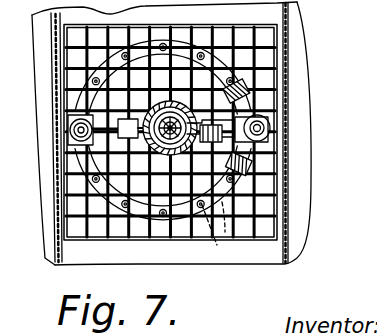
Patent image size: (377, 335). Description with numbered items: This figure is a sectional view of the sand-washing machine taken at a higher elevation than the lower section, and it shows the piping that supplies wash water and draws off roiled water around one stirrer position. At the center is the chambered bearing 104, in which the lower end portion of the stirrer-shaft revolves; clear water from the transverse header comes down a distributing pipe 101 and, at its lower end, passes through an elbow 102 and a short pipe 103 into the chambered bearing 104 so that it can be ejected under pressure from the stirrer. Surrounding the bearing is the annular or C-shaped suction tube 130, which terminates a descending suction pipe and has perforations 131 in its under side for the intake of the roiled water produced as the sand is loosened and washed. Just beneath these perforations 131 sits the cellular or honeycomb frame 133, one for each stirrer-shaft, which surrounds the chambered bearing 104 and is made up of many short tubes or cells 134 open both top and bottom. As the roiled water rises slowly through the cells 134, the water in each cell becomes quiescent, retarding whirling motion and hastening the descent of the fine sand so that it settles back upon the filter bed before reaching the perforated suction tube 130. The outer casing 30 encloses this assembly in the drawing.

The casing 30 is at (201, 132).
The distributing pipe 101 is at (268, 118).
The elbow 102 is at (269, 140).
The pipe 103 is at (252, 155).
The chambered bearing 104 is at (163, 160).
The C-shaped suction tube 130 is at (180, 212).
The perforations 131 is at (209, 228).
The cellular or honeycomb frame 133 is at (123, 241).
The short tubes or cells 134 is at (72, 77).